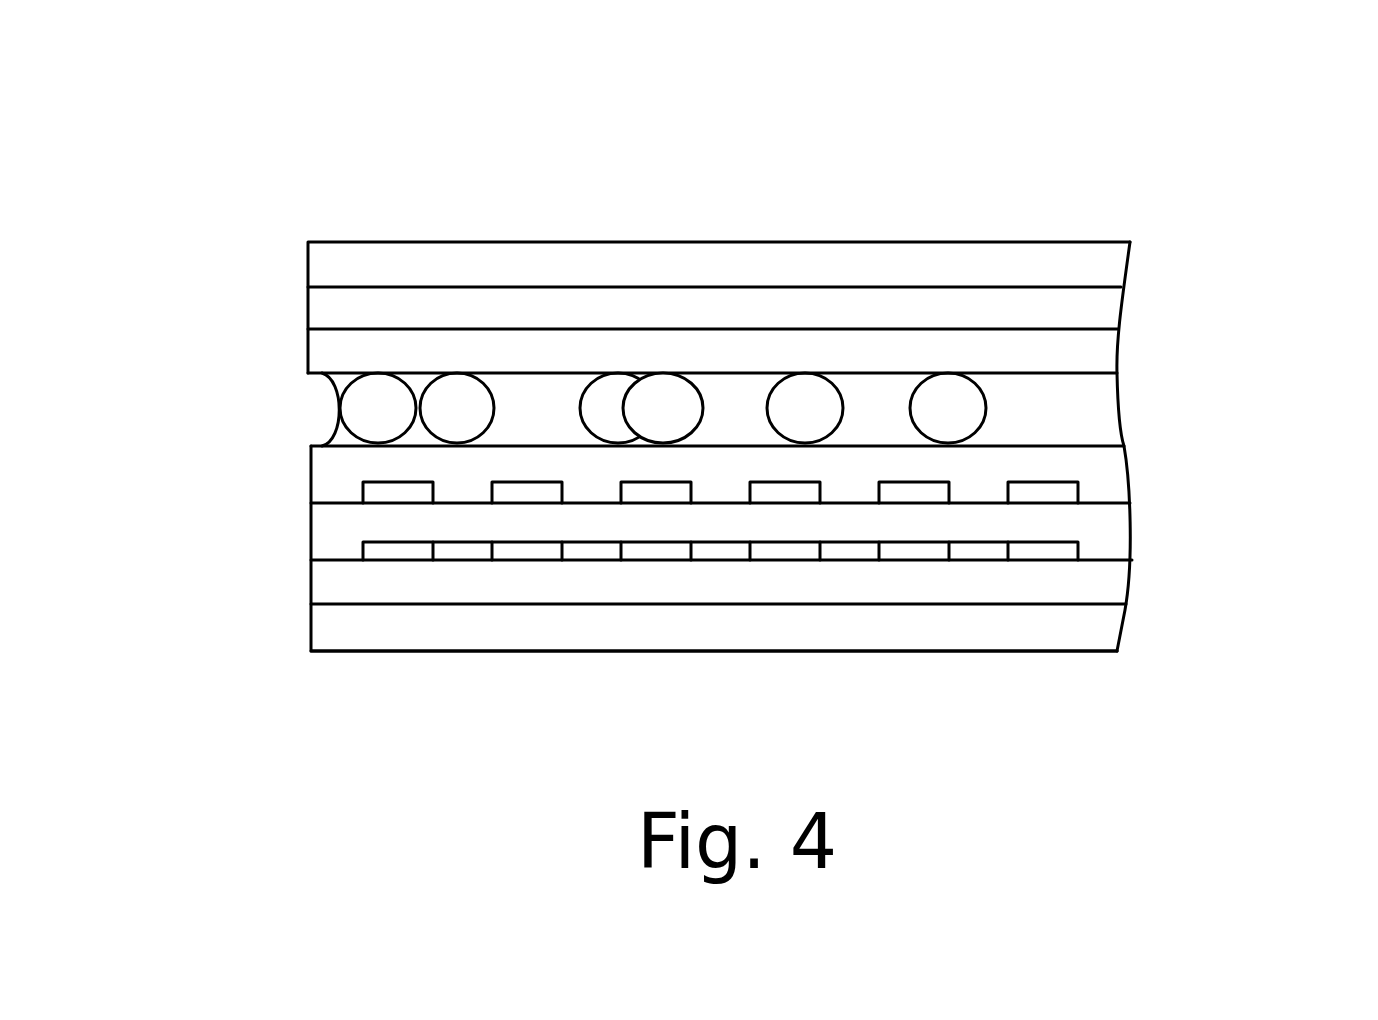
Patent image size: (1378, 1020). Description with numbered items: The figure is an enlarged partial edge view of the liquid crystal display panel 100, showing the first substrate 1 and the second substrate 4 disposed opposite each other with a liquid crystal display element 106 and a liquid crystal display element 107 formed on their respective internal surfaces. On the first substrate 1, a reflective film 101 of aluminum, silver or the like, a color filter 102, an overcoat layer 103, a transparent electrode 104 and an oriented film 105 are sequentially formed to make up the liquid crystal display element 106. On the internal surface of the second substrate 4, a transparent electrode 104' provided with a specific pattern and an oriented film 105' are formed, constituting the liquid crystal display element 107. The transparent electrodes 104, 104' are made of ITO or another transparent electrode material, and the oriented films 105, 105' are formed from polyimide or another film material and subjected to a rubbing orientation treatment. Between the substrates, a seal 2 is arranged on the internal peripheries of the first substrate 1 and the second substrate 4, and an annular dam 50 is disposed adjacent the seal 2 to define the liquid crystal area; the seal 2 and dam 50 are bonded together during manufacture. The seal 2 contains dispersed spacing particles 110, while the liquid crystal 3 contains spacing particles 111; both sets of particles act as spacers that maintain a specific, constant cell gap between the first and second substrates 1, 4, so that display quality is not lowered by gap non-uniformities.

The liquid crystal display panel 100 is at (1042, 170).
The second substrate 4 is at (847, 257).
The transparent electrode 104' is at (790, 293).
The oriented film 105' is at (790, 357).
The liquid crystal display element 107 is at (841, 316).
The seal 2 is at (320, 392).
The annular dam 50 is at (528, 393).
The spacing particles 110 is at (378, 402).
The liquid crystal 3 is at (618, 402).
The spacing particles 111 is at (963, 406).
The liquid crystal display element 106 is at (590, 525).
The oriented film 105 is at (637, 437).
The transparent electrode 104 is at (614, 494).
The overcoat layer 103 is at (348, 519).
The color filter 102 is at (387, 556).
The reflective film 101 is at (470, 585).
The first substrate 1 is at (873, 627).